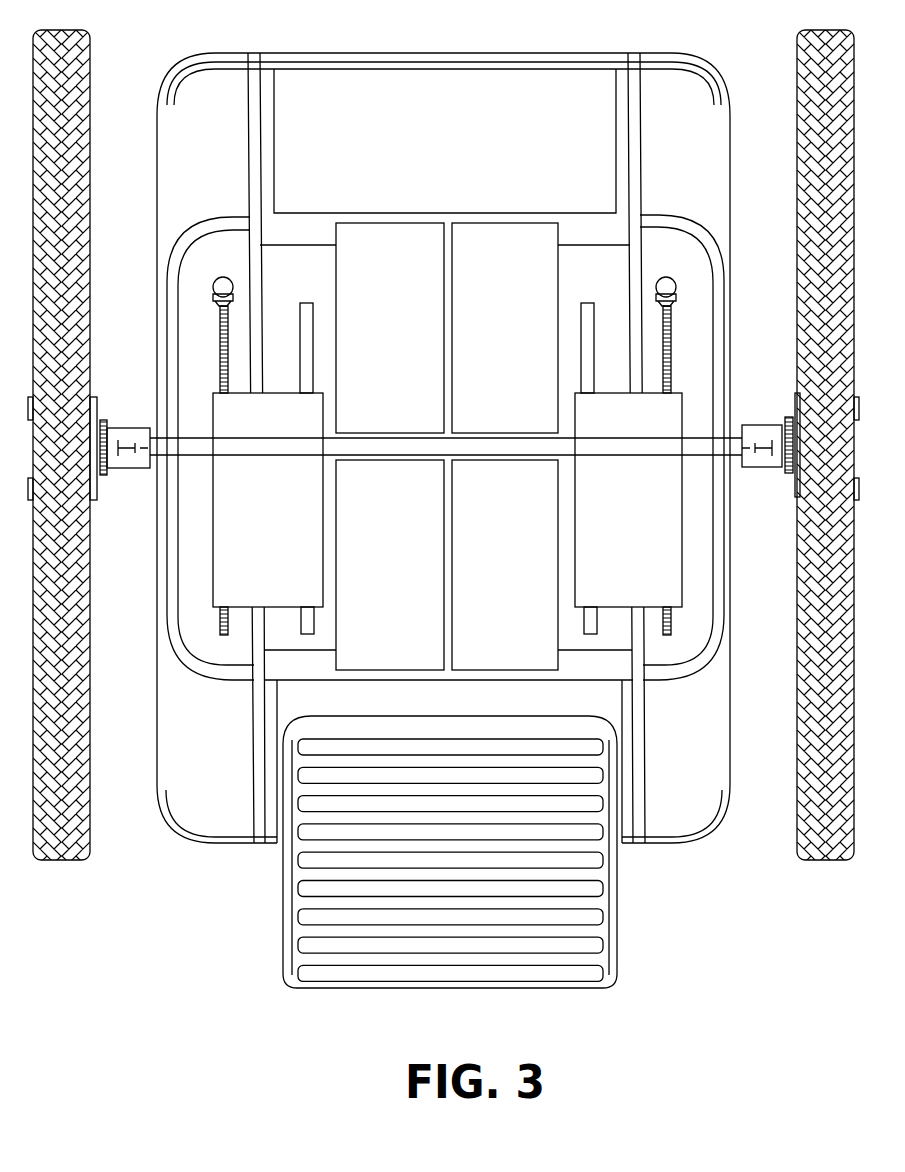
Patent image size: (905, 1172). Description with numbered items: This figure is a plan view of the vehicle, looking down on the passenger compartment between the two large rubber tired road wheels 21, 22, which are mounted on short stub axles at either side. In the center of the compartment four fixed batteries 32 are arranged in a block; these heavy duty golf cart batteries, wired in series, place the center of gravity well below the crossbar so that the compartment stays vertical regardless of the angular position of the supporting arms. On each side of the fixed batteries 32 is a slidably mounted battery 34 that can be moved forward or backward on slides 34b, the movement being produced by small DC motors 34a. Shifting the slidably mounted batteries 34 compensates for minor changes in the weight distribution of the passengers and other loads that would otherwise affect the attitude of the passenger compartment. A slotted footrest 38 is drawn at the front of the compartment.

The road wheel 21 is at (88, 98).
The road wheel 22 is at (797, 97).
The batteries 32 is at (370, 319).
The slidably mounted batteries 34 is at (252, 545).
The DC motors 34a is at (220, 285).
The slides 34b is at (305, 312).
The footrest 38 is at (587, 947).